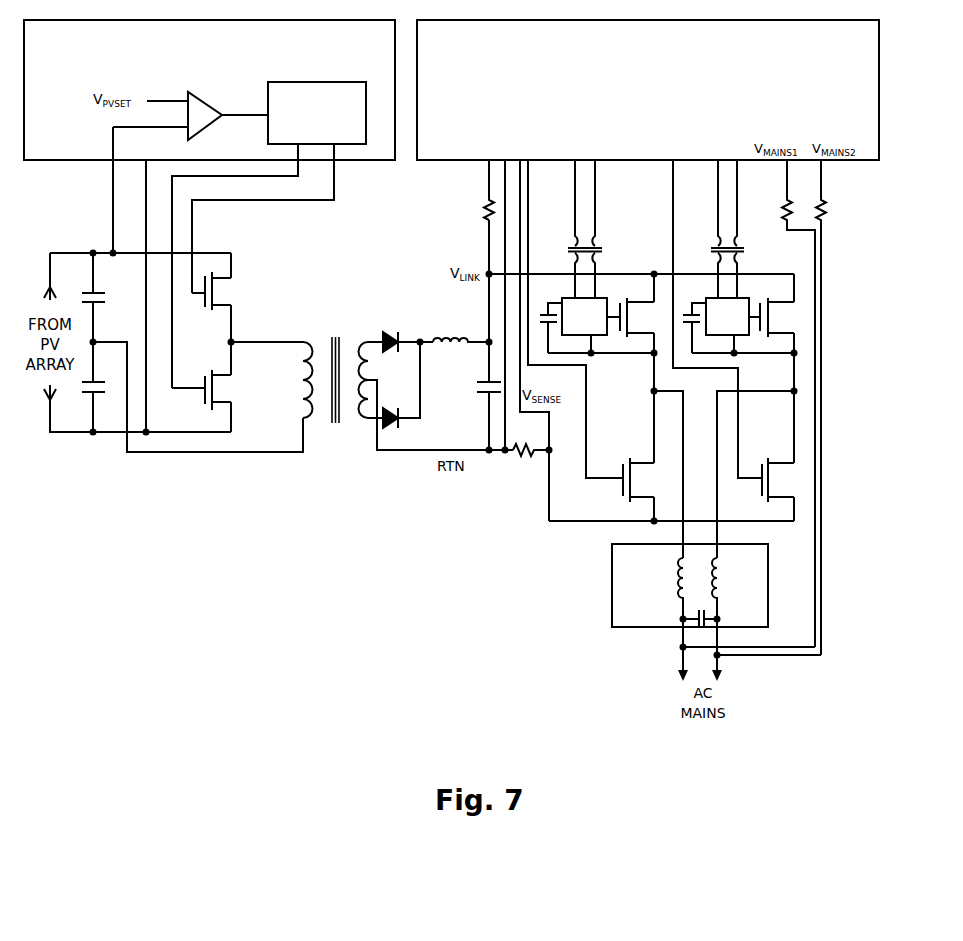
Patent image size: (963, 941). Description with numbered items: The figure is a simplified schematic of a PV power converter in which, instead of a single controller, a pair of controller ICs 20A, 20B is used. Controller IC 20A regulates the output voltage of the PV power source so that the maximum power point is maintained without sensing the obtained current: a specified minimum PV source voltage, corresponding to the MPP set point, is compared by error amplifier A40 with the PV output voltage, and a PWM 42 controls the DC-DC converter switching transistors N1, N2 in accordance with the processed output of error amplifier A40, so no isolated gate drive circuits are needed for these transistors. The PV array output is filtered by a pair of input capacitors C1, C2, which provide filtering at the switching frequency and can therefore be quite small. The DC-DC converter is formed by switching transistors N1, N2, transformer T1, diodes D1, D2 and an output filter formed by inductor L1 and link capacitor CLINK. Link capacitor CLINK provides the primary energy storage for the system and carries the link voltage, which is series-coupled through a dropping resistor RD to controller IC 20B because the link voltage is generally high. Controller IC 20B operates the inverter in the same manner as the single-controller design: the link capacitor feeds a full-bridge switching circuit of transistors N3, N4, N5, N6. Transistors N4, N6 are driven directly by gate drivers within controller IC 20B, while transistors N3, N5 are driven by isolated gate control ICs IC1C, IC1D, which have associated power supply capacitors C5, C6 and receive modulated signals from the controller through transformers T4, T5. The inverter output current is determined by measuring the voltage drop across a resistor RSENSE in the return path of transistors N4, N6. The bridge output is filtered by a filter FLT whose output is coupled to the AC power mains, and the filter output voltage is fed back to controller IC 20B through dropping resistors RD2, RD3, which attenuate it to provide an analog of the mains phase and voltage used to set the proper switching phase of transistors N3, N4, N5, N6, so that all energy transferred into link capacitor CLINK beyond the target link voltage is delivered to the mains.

The controller IC 20A is at (209, 90).
The controller IC 20B is at (648, 90).
The PWM 42 is at (317, 113).
The error amplifier A40 is at (211, 124).
The input capacitor C1 is at (99, 297).
The input capacitor C2 is at (99, 387).
The switching transistor N1 is at (226, 314).
The switching transistor N2 is at (216, 401).
The transformer T1 is at (335, 366).
The diode D1 is at (400, 330).
The diode D2 is at (394, 385).
The inductor L1 is at (461, 325).
The link capacitor CLINK is at (473, 335).
The dropping resistor RD is at (475, 190).
The sense resistor RSENSE is at (523, 462).
The transformer T4 is at (577, 229).
The transformer T5 is at (719, 229).
The isolated gate control IC IC1C is at (584, 325).
The isolated gate control IC IC1D is at (727, 325).
The power supply capacitor C5 is at (543, 320).
The power supply capacitor C6 is at (693, 320).
The transistor N3 is at (634, 368).
The transistor N4 is at (642, 489).
The transistor N5 is at (775, 368).
The transistor N6 is at (781, 489).
The dropping resistor RD2 is at (784, 403).
The dropping resistor RD3 is at (833, 407).
The filter FLT is at (690, 599).